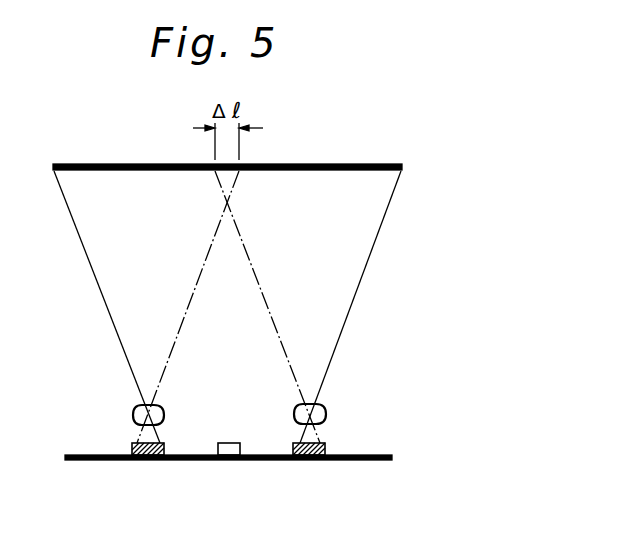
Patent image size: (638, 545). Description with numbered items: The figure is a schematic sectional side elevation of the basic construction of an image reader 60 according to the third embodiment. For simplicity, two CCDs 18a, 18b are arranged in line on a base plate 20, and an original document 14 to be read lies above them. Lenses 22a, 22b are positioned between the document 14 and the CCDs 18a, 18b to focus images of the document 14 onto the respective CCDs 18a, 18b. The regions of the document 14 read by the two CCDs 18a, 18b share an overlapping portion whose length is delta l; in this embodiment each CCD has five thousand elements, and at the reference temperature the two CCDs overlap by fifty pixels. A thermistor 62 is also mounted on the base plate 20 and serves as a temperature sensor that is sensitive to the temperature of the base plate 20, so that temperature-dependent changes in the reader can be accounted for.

The original document 14 is at (347, 164).
The image reader 60 is at (452, 209).
The lens 22a is at (136, 414).
The lens 22b is at (322, 413).
The CCD 18a is at (148, 460).
The CCD 18b is at (310, 460).
The thermistor 62 is at (230, 456).
The base plate 20 is at (378, 461).